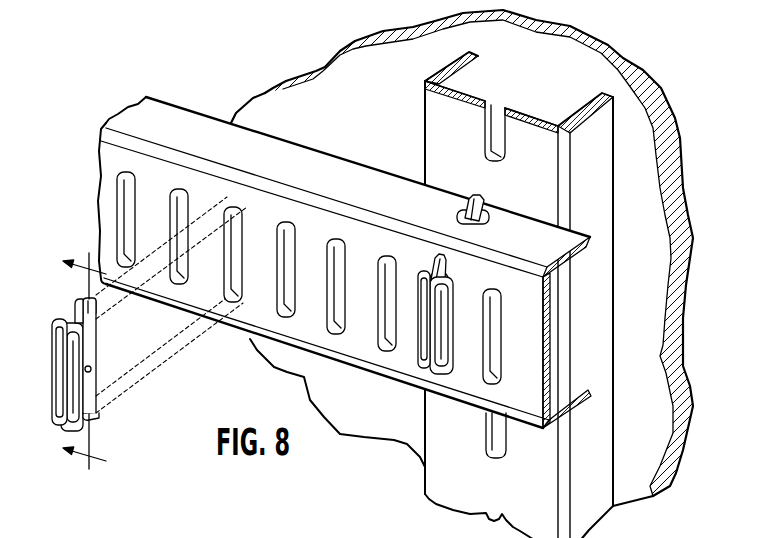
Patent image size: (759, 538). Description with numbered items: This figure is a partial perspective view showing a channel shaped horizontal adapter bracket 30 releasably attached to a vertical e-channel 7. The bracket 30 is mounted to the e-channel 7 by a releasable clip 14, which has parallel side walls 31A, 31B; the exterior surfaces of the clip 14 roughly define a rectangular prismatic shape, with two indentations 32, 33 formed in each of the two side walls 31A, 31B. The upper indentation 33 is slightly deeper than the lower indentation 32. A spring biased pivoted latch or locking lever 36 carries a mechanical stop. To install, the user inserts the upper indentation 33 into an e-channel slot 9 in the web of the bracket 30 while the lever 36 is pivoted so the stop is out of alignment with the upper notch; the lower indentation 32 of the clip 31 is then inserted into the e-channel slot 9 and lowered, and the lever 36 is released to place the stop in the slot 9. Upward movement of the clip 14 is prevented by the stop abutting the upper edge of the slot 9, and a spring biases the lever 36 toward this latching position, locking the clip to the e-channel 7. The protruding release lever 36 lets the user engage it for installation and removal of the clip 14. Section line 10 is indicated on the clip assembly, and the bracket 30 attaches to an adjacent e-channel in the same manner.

The e-channel 7 is at (550, 512).
The e-channel slot 9 is at (487, 103).
The section line 10 is at (84, 358).
The releasable clip 14 is at (418, 370).
The horizontal adapter bracket 30 is at (197, 133).
The clip 31 is at (482, 213).
The side wall 31A is at (92, 384).
The side wall 31B is at (50, 356).
The lower indentation 32 is at (88, 413).
The upper indentation 33 is at (90, 313).
The locking lever 36 is at (71, 300).